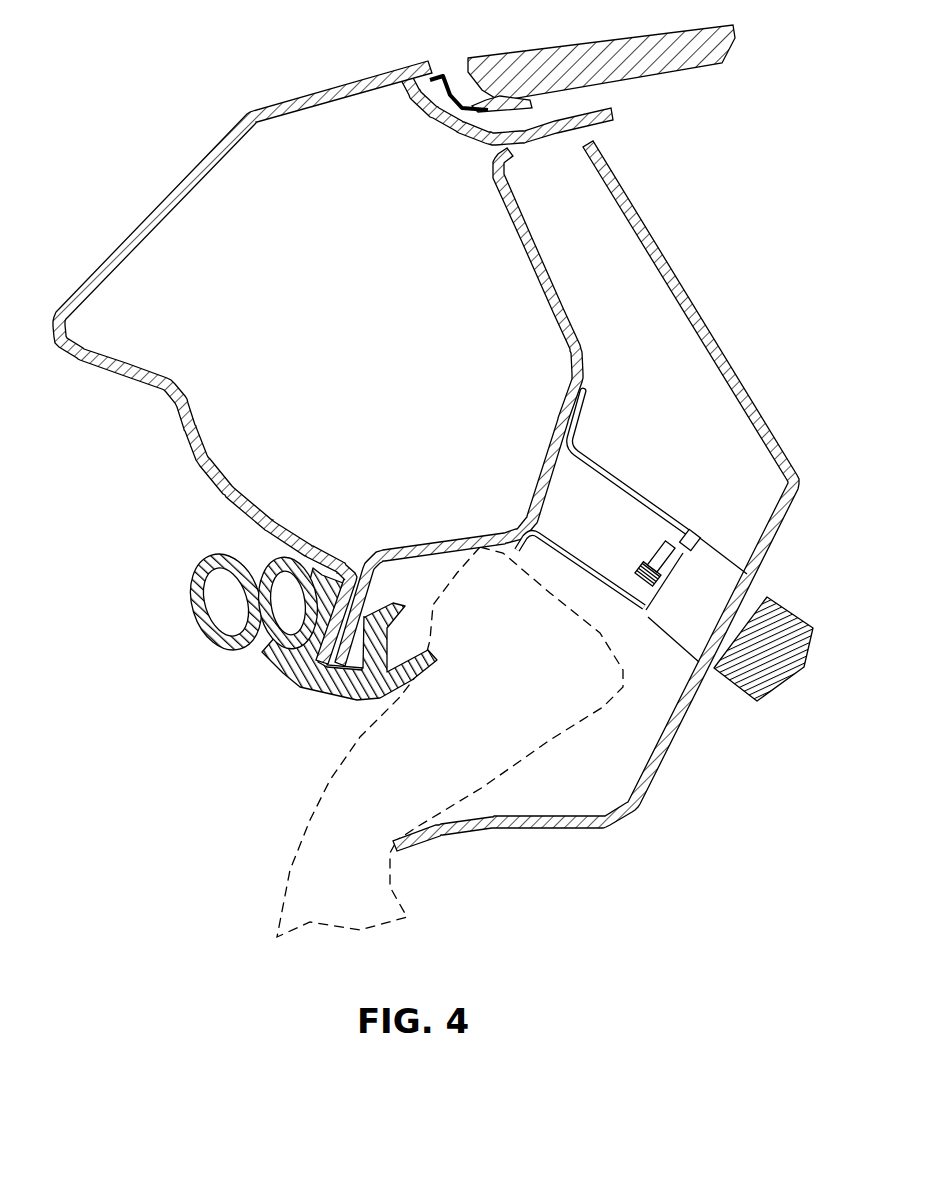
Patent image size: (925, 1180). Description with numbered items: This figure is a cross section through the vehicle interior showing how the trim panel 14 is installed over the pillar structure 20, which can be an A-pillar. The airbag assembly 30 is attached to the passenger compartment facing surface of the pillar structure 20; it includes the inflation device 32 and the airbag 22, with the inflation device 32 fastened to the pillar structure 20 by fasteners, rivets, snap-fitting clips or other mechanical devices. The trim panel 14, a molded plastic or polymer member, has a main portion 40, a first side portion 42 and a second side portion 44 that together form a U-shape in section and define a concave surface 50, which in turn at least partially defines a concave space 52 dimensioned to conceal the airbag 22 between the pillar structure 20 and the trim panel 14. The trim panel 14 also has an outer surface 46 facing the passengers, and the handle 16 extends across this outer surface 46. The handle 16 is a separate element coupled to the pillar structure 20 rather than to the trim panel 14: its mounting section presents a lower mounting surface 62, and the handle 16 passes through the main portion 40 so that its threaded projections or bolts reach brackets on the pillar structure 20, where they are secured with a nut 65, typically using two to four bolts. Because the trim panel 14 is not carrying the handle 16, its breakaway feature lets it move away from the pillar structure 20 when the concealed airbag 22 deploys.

The trim panel 14 is at (657, 763).
The handle 16 is at (787, 683).
The pillar structure 20 is at (178, 425).
The airbag 22 is at (323, 793).
The airbag assembly 30 is at (449, 562).
The inflation device 32 is at (487, 540).
The main portion 40 is at (787, 523).
The first side portion 42 is at (697, 313).
The second side portion 44 is at (535, 827).
The outer surface 46 is at (683, 717).
The concave surface 50 is at (657, 743).
The concave space 52 is at (690, 387).
The lower mounting surface 62 is at (688, 533).
The nut 65 is at (667, 552).